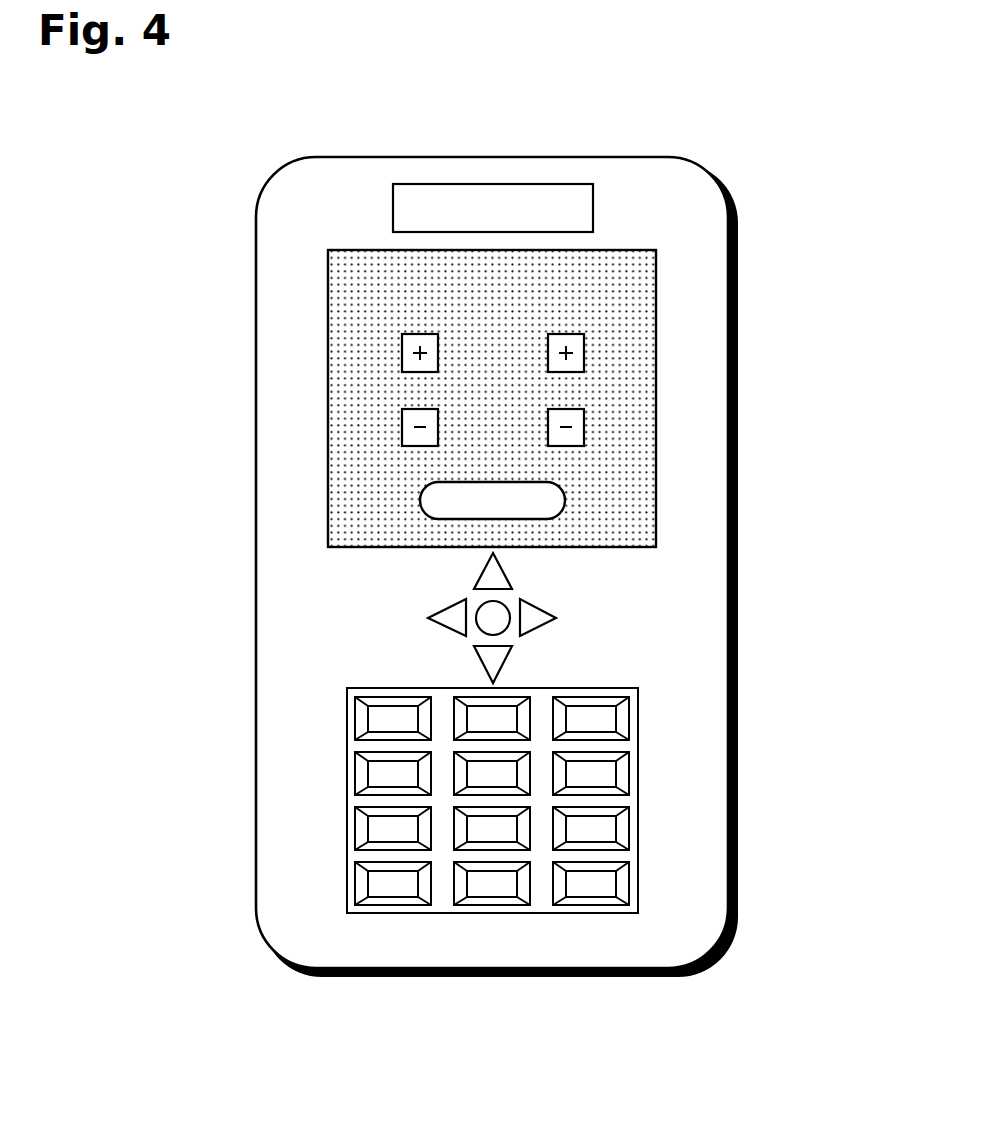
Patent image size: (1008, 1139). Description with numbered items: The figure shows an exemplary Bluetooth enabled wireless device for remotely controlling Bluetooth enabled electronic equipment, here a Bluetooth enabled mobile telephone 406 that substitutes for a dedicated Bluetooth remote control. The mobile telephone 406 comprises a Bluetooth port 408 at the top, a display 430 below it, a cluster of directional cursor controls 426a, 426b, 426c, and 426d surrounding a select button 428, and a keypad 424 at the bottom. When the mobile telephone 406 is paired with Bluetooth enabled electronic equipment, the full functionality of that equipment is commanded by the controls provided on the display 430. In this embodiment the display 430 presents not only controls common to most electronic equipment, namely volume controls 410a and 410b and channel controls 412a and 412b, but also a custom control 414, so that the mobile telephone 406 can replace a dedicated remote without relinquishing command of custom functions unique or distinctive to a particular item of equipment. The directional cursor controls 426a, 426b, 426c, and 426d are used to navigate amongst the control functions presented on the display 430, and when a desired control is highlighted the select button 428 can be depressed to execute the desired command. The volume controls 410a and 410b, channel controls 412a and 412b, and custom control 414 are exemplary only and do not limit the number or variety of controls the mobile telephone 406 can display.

The Bluetooth enabled mobile telephone 406 is at (835, 91).
The Bluetooth port 408 is at (594, 211).
The display 430 is at (512, 301).
The volume control 410a is at (416, 334).
The volume control 410b is at (418, 447).
The channel control 412a is at (572, 334).
The channel control 412b is at (566, 447).
The custom control 414 is at (512, 481).
The keypad 424 is at (372, 687).
The directional cursor control 426a is at (485, 573).
The directional cursor control 426b is at (502, 660).
The directional cursor control 426c is at (445, 612).
The directional cursor control 426d is at (545, 612).
The select button 428 is at (508, 604).